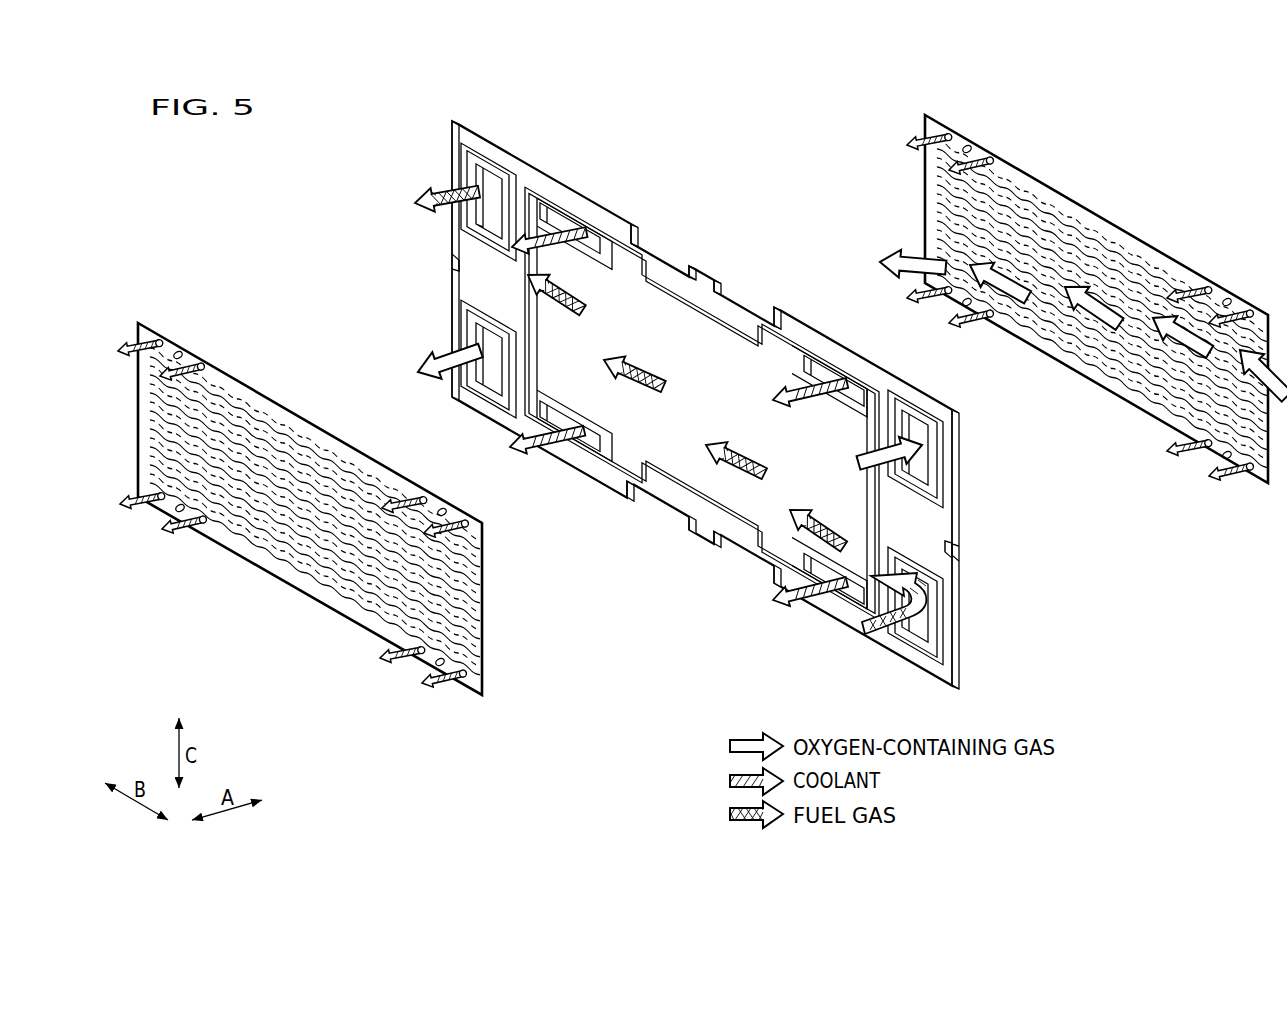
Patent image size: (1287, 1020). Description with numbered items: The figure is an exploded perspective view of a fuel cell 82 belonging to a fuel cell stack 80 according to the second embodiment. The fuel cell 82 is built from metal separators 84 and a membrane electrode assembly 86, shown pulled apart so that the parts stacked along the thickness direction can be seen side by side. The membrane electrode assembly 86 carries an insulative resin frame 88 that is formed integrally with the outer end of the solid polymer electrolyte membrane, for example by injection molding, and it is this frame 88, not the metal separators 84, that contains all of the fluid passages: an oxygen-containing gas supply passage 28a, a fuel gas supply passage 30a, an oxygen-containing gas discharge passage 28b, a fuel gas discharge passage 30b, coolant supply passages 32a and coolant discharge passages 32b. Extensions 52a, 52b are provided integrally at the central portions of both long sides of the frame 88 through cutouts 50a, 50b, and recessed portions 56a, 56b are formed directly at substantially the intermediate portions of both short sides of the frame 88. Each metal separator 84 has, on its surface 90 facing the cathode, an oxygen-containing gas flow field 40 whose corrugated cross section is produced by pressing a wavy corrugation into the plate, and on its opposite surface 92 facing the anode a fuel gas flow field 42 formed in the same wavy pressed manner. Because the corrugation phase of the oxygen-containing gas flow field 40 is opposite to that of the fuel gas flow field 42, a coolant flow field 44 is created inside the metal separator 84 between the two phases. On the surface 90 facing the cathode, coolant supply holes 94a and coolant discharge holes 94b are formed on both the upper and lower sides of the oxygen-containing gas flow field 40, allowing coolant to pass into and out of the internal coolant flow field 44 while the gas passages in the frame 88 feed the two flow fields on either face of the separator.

The oxygen-containing gas supply passage 28a is at (920, 466).
The oxygen-containing gas discharge passage 28b is at (490, 350).
The fuel gas supply passage 30a is at (920, 637).
The fuel gas discharge passage 30b is at (490, 178).
The coolant supply passages 32a is at (818, 355).
The coolant discharge passages 32b is at (563, 205).
The oxygen-containing gas flow field 40 is at (234, 407).
The fuel gas flow field 42 is at (264, 422).
The coolant flow field 44 is at (246, 540).
The cutout 50a is at (645, 236).
The cutout 50b is at (645, 492).
The extension 52a is at (702, 270).
The extension 52b is at (701, 540).
The recessed portion 56a is at (960, 549).
The recessed portion 56b is at (450, 263).
The fuel cell stack 80 is at (740, 299).
The fuel cell 82 is at (310, 421).
The metal separator 84 is at (135, 321).
The membrane electrode assembly 86 is at (448, 119).
The resin frame 88 is at (938, 521).
The surface facing the cathode 90 is at (297, 567).
The surface facing the anode 92 is at (340, 618).
The coolant supply holes 94a is at (443, 507).
The coolant discharge holes 94b is at (180, 350).